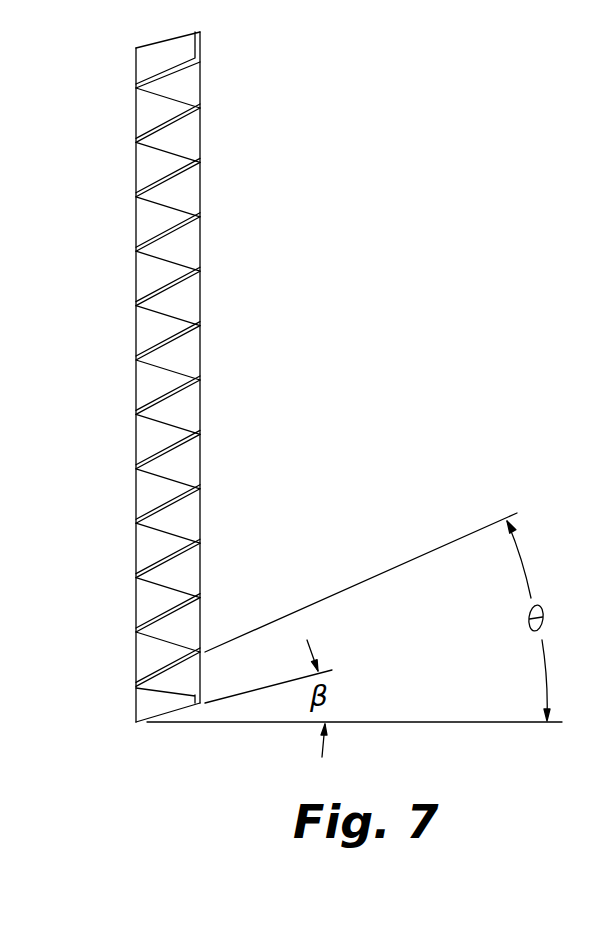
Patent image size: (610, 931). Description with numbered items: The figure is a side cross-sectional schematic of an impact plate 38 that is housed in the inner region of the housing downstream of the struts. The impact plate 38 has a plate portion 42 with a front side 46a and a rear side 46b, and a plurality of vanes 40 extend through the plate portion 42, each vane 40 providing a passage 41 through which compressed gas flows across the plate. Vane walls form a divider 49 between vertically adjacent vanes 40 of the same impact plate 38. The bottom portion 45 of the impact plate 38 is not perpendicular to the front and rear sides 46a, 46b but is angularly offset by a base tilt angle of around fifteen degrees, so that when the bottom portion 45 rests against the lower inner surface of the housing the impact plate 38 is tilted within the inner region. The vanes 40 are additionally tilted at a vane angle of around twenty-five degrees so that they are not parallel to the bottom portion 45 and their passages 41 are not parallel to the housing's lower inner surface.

The impact plate 38 is at (200, 138).
The plate portion 42 is at (200, 73).
The bottom portion 45 is at (178, 712).
The front side 46a is at (136, 283).
The rear side 46b is at (200, 290).
The divider 49 is at (172, 237).
The passage 41 is at (180, 353).
The vane 40 is at (180, 467).